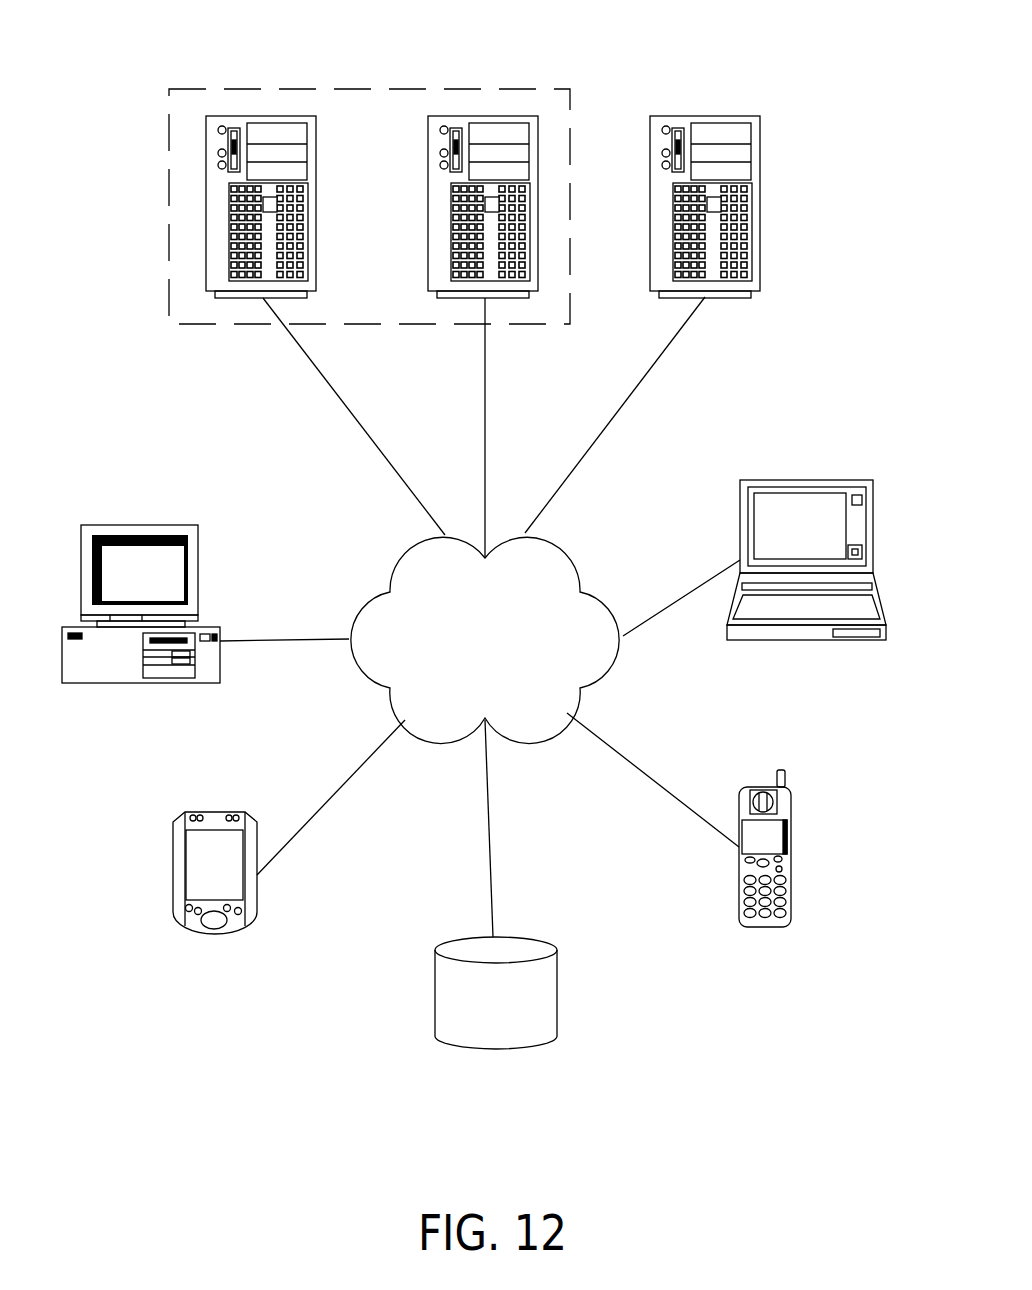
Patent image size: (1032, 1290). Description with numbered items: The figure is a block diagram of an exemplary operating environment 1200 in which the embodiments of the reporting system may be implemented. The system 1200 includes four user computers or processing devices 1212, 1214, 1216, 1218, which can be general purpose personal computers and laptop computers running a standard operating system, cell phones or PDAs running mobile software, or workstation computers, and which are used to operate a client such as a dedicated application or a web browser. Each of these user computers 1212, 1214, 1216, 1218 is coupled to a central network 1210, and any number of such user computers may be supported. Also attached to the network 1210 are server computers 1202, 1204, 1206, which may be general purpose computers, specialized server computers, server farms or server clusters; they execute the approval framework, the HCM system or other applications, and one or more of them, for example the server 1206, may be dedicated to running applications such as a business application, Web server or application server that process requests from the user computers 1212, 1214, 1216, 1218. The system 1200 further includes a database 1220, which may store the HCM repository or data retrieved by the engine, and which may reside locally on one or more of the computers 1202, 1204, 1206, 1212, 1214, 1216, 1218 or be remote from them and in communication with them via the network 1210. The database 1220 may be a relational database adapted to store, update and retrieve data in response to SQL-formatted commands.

The operating environment 1200 is at (853, 117).
The server computer 1202 is at (242, 115).
The server computer 1204 is at (478, 115).
The server computer 1206 is at (760, 203).
The network 1210 is at (459, 687).
The user computer 1212 is at (138, 527).
The user computer 1214 is at (803, 480).
The user computer 1216 is at (760, 928).
The user computer 1218 is at (213, 936).
The database 1220 is at (522, 1041).